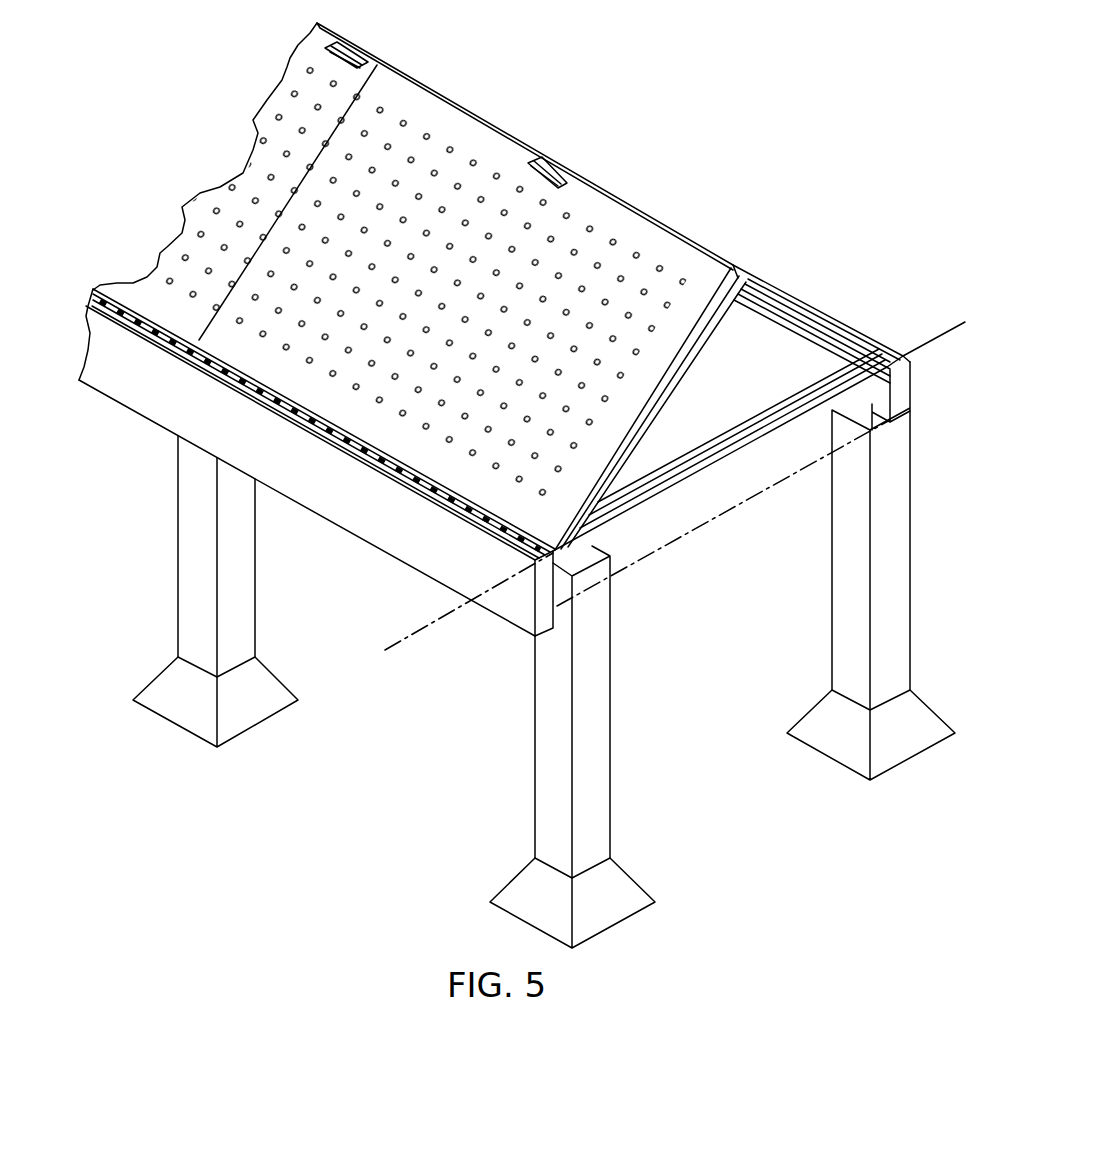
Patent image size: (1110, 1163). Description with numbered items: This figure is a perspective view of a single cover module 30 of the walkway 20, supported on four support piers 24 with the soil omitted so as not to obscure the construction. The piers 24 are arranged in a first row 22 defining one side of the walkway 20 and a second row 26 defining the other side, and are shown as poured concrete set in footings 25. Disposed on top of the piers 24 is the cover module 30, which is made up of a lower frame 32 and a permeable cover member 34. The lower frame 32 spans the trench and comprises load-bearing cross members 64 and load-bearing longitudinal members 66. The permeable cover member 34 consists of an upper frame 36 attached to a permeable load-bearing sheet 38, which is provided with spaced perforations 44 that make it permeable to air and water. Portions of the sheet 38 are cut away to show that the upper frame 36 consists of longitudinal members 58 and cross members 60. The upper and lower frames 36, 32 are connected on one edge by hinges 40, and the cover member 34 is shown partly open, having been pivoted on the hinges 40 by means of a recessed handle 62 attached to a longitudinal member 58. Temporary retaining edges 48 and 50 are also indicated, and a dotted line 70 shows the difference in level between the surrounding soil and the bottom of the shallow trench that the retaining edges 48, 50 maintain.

The walkway 20 is at (650, 99).
The first row 22 is at (232, 797).
The support piers 24 is at (237, 582).
The footings 25 is at (250, 703).
The second row 26 is at (902, 802).
The cover module 30 is at (554, 92).
The lower frame 32 is at (810, 337).
The permeable cover member 34 is at (662, 207).
The upper frame 36 is at (685, 357).
The permeable load-bearing sheet 38 is at (200, 217).
The hinges 40 is at (250, 395).
The perforations 44 is at (265, 136).
The temporary retaining edge 48 is at (510, 613).
The temporary retaining edge 50 is at (874, 343).
The longitudinal members 58 is at (92, 292).
The cross members 60 is at (631, 435).
The recessed handle 62 is at (352, 52).
The load-bearing cross members 64 is at (748, 447).
The load-bearing longitudinal members 66 is at (768, 302).
The dotted line 70 is at (428, 623).